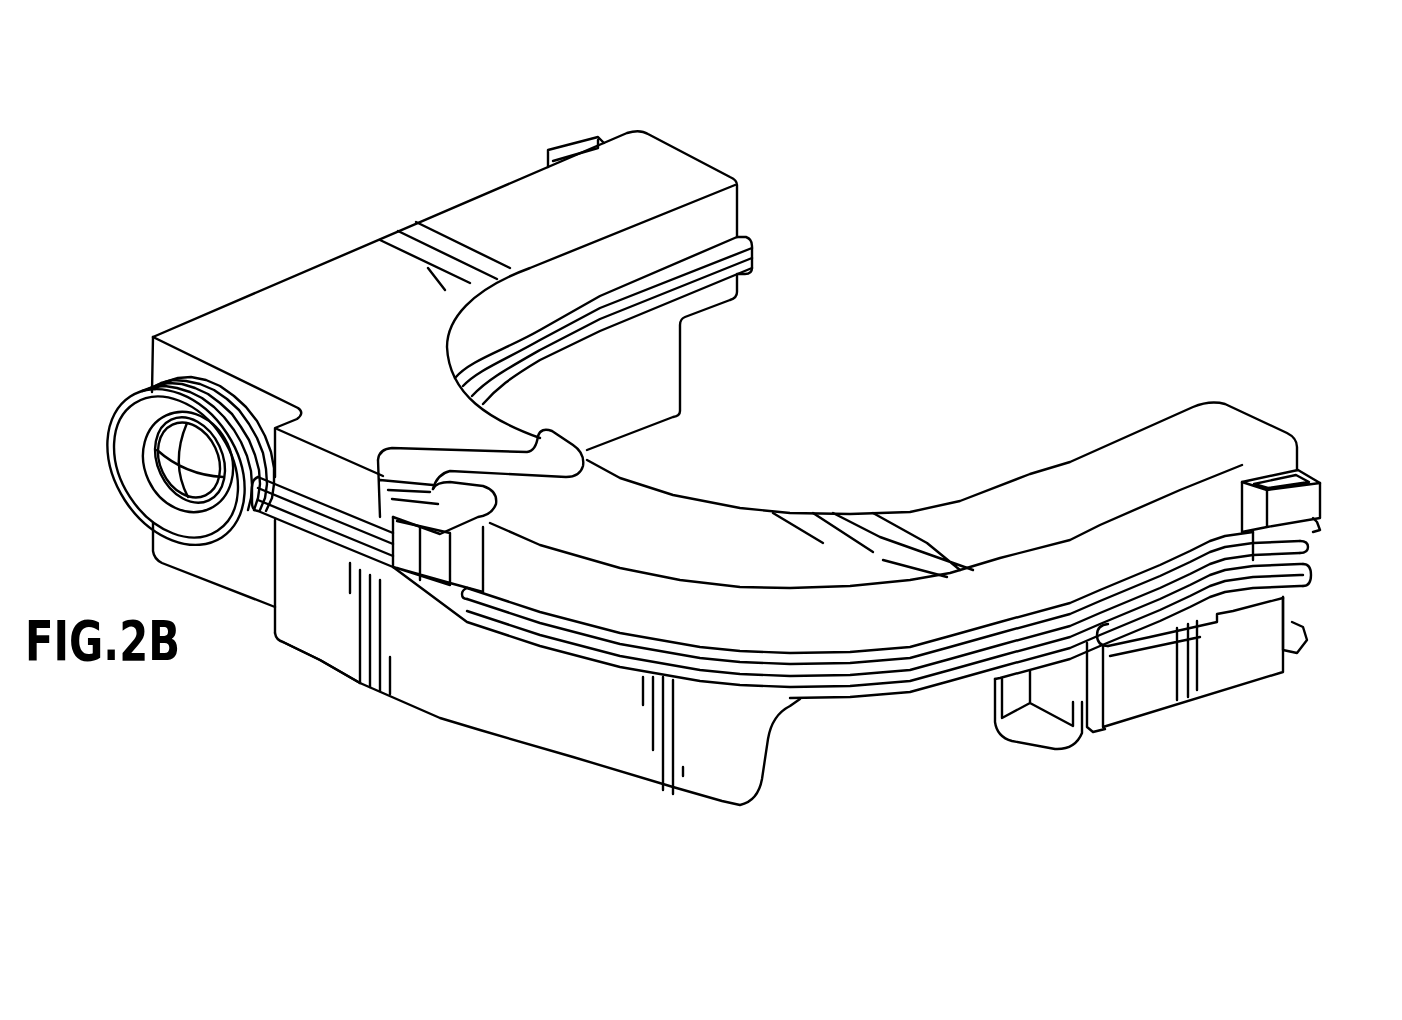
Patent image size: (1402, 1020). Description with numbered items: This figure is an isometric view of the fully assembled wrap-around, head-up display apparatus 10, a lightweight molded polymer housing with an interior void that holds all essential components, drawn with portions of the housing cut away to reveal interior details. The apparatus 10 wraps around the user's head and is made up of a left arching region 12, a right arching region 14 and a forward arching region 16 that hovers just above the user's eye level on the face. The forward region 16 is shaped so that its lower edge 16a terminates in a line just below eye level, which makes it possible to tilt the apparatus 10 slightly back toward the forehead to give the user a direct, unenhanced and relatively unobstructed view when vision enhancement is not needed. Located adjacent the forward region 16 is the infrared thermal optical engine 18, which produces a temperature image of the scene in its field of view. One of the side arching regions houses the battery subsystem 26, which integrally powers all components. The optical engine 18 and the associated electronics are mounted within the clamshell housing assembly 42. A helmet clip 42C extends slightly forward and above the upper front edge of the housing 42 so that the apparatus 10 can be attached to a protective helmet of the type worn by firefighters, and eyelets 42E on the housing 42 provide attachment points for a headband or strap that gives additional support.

The wrap-around head-up display apparatus 10 is at (165, 317).
The left arching region 12 is at (1104, 478).
The right arching region 14 is at (483, 230).
The forward arching region 16 is at (441, 744).
The lower edge 16a is at (333, 668).
The IR optical engine 18 is at (103, 405).
The battery subsystem 26 is at (1227, 670).
The clamshell housing assembly 42 is at (1287, 403).
The helmet clip 42C is at (417, 445).
The eyelets 42E is at (577, 145).